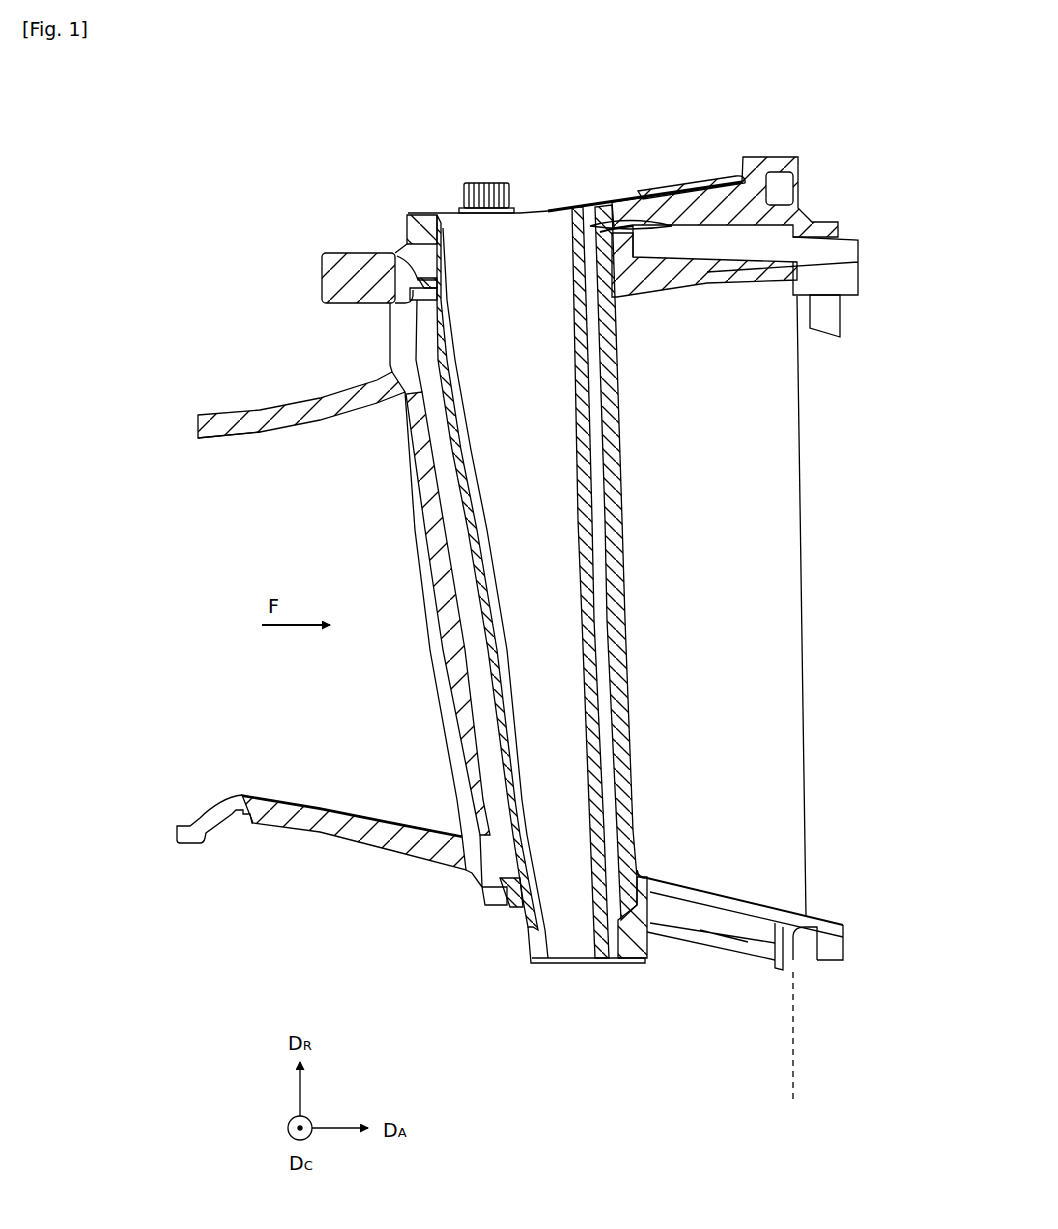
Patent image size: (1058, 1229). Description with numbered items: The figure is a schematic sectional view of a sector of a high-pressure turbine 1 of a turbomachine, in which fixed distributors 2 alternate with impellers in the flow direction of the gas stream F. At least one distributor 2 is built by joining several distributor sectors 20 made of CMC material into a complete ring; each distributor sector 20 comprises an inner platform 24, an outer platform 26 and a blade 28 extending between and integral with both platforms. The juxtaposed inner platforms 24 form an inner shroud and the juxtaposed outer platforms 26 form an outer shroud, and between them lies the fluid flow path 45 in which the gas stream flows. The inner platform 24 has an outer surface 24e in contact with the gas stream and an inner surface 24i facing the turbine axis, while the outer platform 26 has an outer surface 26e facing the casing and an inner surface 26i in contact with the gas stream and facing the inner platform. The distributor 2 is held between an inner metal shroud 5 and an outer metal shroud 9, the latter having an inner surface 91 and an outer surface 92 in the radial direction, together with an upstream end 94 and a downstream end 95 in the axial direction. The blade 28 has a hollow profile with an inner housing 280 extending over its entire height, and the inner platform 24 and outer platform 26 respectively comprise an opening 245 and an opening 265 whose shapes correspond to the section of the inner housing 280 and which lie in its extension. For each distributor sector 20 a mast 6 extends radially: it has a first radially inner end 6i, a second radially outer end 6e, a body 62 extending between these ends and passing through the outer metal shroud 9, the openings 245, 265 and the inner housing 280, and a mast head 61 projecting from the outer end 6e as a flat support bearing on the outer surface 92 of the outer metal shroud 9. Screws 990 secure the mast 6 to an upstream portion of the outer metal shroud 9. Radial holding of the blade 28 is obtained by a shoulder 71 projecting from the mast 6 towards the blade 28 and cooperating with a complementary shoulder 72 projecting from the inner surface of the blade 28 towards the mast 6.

The high-pressure turbine 1 is at (400, 157).
The fixed distributor 2 is at (868, 533).
The inner metal shroud 5 is at (793, 1025).
The mast 6 is at (480, 503).
The second radially outer end 6e is at (586, 204).
The first radially inner end 6i is at (534, 970).
The outer metal shroud 9 is at (408, 228).
The distributor sector 20 is at (803, 624).
The inner platform 24 is at (848, 932).
The outer surface of inner platform 24e is at (828, 922).
The inner surface of inner platform 24i is at (826, 950).
The outer platform 26 is at (858, 248).
The outer surface of outer platform 26e is at (240, 414).
The inner surface of outer platform 26i is at (243, 439).
The blade 28 is at (778, 484).
The fluid flow path 45 is at (372, 719).
The mast head 61 is at (706, 185).
The body 62 is at (547, 433).
The shoulder 71 is at (420, 298).
The complementary shoulder 72 is at (415, 304).
The inner surface 91 is at (612, 222).
The outer surface 92 is at (626, 201).
The upstream end 94 is at (320, 271).
The downstream end 95 is at (776, 189).
The opening 245 is at (620, 922).
The opening 265 is at (595, 370).
The inner housing 280 is at (612, 796).
The screws 990 is at (491, 183).